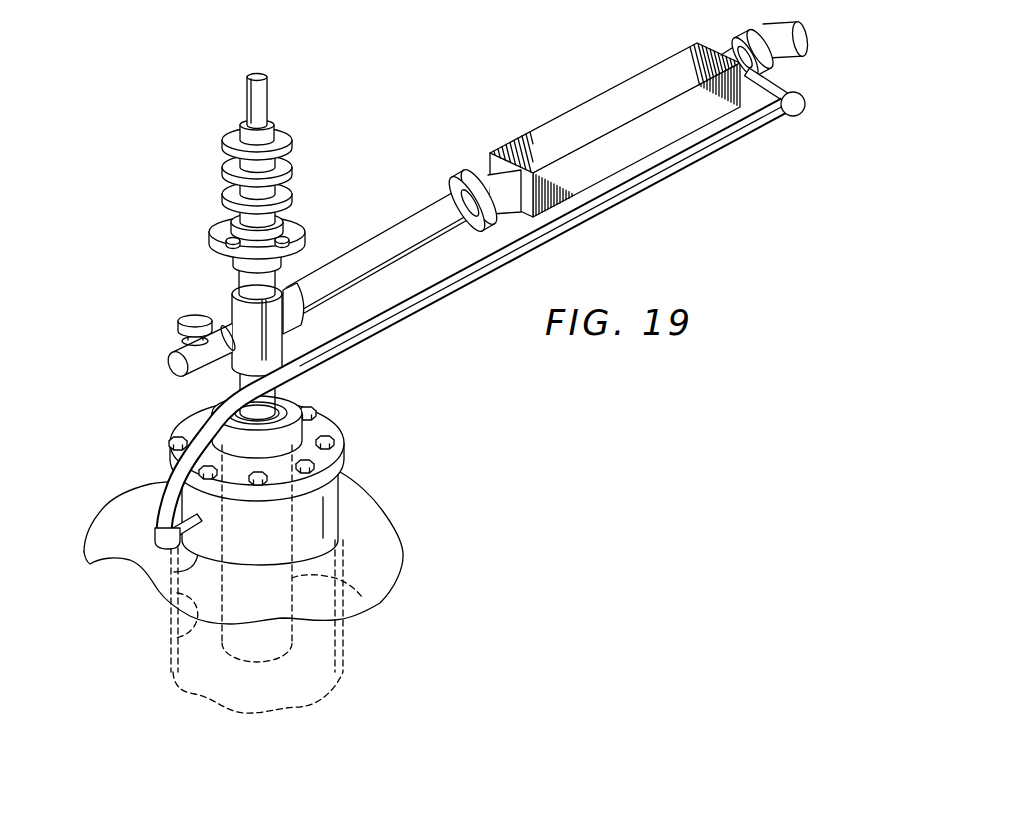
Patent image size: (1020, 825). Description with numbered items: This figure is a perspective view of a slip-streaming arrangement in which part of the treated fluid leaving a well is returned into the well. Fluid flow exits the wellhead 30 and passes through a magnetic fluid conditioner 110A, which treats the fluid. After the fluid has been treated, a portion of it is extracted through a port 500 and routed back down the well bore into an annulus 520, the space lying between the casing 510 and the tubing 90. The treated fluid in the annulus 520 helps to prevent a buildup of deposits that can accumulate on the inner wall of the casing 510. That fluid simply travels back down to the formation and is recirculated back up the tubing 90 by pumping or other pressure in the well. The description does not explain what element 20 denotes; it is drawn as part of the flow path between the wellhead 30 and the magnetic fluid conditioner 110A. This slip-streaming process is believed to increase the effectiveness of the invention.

The conduit 20 is at (399, 226).
The wellhead 30 is at (208, 238).
The tubing 90 is at (365, 601).
The magnetic fluid conditioner 110A is at (598, 94).
The port 500 is at (784, 85).
The casing 510 is at (345, 483).
The annulus 520 is at (166, 634).